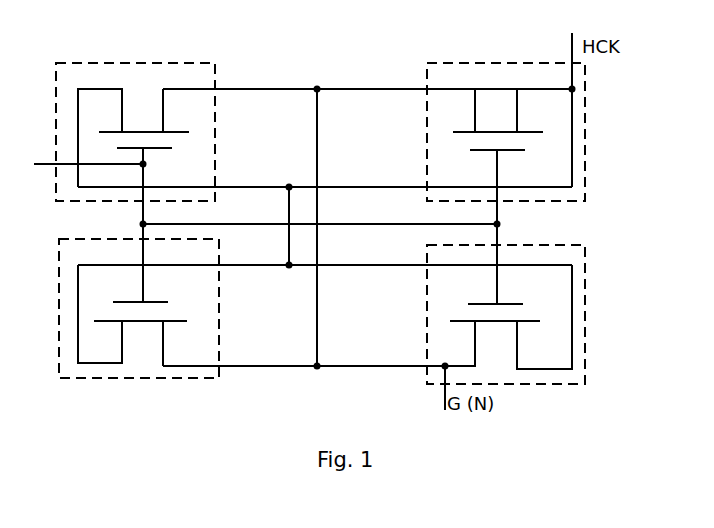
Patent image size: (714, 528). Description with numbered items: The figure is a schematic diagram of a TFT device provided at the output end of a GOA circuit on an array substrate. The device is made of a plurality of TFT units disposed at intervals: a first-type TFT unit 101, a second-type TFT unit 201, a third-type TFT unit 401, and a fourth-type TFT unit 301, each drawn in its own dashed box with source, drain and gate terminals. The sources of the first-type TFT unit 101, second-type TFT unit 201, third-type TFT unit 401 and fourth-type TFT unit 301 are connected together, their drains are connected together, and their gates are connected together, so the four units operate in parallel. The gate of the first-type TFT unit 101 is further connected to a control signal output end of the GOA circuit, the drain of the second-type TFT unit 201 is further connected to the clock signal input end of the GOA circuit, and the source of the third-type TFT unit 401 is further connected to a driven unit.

The first-type TFT unit 101 is at (135, 63).
The second-type TFT unit 201 is at (497, 63).
The fourth-type TFT unit 301 is at (140, 379).
The third-type TFT unit 401 is at (553, 384).